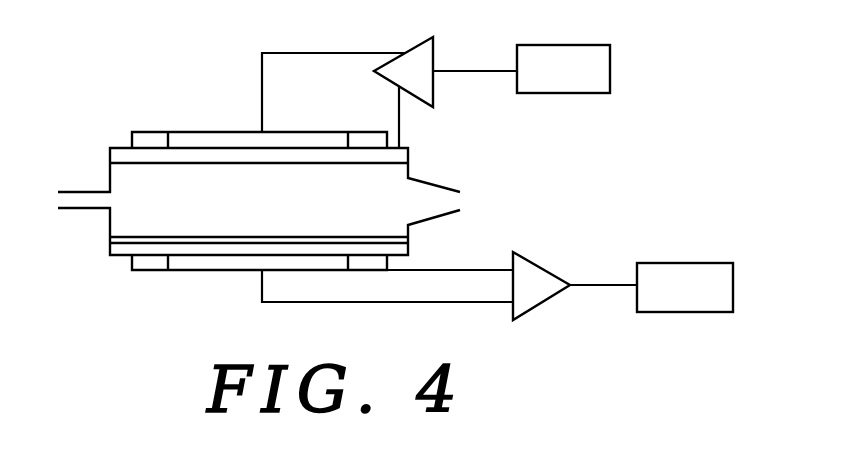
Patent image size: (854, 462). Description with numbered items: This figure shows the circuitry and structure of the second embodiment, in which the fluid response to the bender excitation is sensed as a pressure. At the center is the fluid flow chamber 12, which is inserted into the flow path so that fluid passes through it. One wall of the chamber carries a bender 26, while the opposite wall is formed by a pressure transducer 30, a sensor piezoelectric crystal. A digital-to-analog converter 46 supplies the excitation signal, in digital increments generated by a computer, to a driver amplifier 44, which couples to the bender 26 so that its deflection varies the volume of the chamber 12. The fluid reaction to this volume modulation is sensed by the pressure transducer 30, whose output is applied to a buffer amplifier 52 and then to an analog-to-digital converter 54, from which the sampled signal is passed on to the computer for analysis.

The fluid flow chamber 12 is at (256, 206).
The bender 26 is at (224, 132).
The pressure transducer 30 is at (204, 270).
The driver amplifier 44 is at (420, 80).
The digital-to-analog converter 46 is at (545, 45).
The buffer amplifier 52 is at (539, 295).
The analog-to-digital converter 54 is at (670, 263).